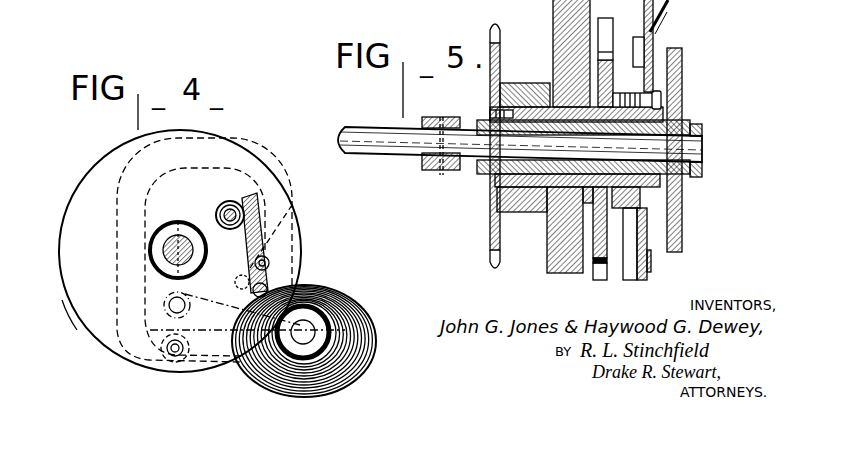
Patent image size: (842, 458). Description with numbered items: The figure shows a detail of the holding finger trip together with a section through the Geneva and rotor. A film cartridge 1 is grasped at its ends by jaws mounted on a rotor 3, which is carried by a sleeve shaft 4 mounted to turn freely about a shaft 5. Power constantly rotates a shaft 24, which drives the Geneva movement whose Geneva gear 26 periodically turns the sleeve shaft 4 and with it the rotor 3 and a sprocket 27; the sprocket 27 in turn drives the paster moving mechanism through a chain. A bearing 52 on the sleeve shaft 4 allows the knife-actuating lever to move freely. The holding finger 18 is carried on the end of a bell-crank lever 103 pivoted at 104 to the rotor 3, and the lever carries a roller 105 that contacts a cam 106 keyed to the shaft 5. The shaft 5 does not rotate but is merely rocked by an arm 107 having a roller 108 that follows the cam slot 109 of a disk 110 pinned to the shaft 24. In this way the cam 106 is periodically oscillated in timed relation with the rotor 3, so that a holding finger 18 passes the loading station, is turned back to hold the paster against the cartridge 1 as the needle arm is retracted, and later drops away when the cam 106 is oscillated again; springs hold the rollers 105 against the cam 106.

In FIG. 4, the film cartridge 1 is at (265, 163).
In FIG. 5, the rotor 3 is at (660, 22).
In FIG. 5, the sleeve shaft 4 is at (661, 116).
In FIG. 4, the shaft 5 is at (312, 322).
In FIG. 5, the shaft 5 is at (704, 148).
In FIG. 4, the holding finger 18 is at (260, 192).
In FIG. 4, the shaft 24 is at (168, 250).
In FIG. 5, the Geneva gear 26 is at (606, 20).
In FIG. 5, the sprocket 27 is at (500, 38).
In FIG. 5, the bearing 52 is at (532, 92).
In FIG. 4, the bell-crank lever 103 is at (283, 244).
In FIG. 4, the pivot 104 is at (272, 253).
In FIG. 4, the roller 105 is at (277, 281).
In FIG. 4, the cam 106 is at (352, 320).
In FIG. 5, the cam 106 is at (683, 215).
In FIG. 4, the arm 107 is at (236, 362).
In FIG. 5, the arm 107 is at (458, 103).
In FIG. 4, the roller 108 is at (177, 363).
In FIG. 4, the cam slot 109 is at (126, 334).
In FIG. 4, the disk 110 is at (96, 317).